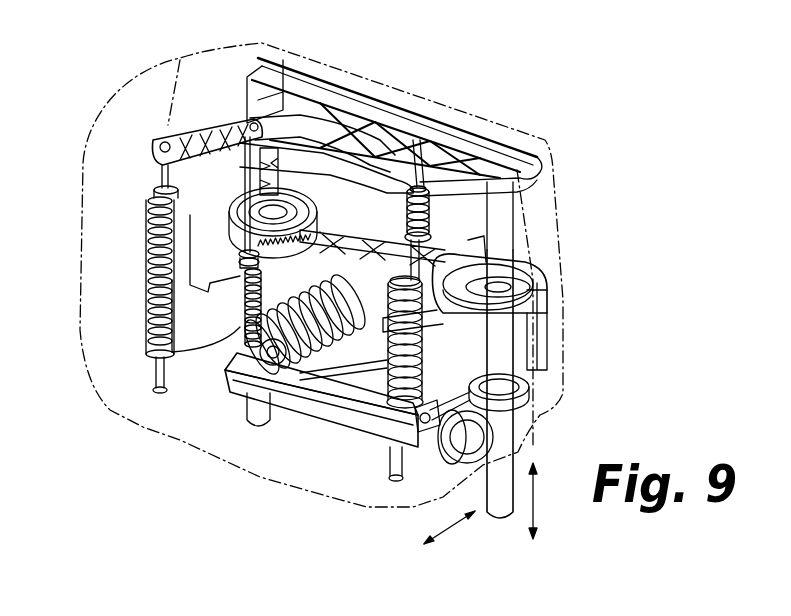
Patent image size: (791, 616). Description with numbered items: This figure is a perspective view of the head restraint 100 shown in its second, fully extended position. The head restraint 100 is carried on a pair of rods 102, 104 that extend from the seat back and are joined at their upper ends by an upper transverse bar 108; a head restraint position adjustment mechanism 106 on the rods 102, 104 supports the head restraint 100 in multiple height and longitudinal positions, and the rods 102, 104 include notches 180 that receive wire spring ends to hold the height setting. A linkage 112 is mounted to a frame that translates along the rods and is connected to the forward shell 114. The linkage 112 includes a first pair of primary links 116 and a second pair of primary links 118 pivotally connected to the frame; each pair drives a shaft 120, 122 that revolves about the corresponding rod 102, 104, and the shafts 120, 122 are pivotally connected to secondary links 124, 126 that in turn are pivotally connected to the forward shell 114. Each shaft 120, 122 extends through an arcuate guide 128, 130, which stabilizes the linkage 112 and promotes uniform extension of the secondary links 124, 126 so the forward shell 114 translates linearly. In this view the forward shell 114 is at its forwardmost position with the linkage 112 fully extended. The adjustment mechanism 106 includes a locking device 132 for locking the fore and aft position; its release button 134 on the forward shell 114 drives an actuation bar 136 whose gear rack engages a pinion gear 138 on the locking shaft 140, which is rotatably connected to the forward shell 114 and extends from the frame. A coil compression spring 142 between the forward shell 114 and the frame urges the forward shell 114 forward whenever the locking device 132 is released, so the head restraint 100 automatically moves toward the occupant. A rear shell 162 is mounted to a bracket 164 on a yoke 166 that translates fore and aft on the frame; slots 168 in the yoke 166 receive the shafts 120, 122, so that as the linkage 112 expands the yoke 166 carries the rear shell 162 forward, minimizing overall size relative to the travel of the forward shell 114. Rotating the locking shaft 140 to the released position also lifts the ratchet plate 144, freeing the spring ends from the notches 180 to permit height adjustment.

The head restraint 100 is at (440, 42).
The rod 102 is at (235, 402).
The rod 104 is at (497, 520).
The head restraint position adjustment mechanism 106 is at (463, 129).
The upper transverse bar 108 is at (355, 100).
The linkage 112 is at (145, 283).
The forward shell 114 is at (110, 410).
The first pair of primary links 116 is at (238, 262).
The second pair of primary links 118 is at (525, 338).
The shaft 120 is at (195, 128).
The shaft 122 is at (527, 168).
The secondary link 124 is at (142, 211).
The secondary link 126 is at (400, 218).
The arcuate guide 128 is at (273, 165).
The arcuate guide 130 is at (432, 148).
The locking device 132 is at (225, 364).
The release button 134 is at (443, 489).
The actuation bar 136 is at (311, 412).
The pinion gear 138 is at (235, 345).
The locking shaft 140 is at (293, 380).
The coil compression spring 142 is at (320, 378).
The ratchet plate 144 is at (560, 282).
The rear shell 162 is at (572, 297).
The bracket 164 is at (430, 223).
The yoke 166 is at (337, 214).
The slots 168 is at (243, 296).
The notches 180 is at (245, 118).